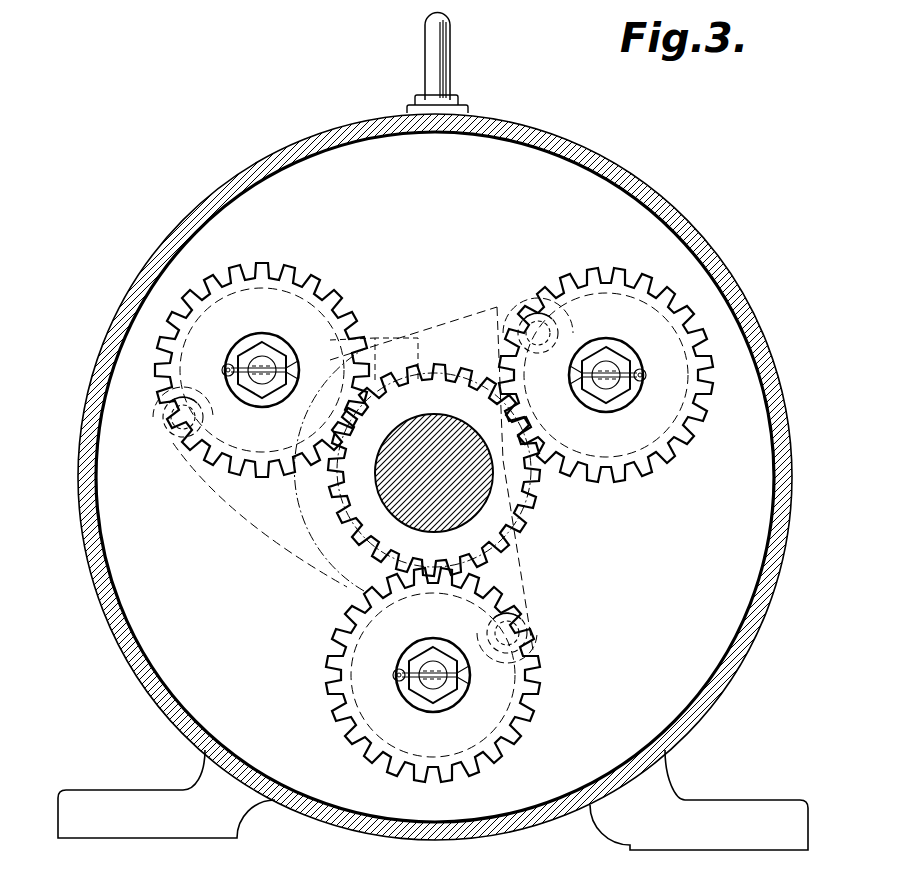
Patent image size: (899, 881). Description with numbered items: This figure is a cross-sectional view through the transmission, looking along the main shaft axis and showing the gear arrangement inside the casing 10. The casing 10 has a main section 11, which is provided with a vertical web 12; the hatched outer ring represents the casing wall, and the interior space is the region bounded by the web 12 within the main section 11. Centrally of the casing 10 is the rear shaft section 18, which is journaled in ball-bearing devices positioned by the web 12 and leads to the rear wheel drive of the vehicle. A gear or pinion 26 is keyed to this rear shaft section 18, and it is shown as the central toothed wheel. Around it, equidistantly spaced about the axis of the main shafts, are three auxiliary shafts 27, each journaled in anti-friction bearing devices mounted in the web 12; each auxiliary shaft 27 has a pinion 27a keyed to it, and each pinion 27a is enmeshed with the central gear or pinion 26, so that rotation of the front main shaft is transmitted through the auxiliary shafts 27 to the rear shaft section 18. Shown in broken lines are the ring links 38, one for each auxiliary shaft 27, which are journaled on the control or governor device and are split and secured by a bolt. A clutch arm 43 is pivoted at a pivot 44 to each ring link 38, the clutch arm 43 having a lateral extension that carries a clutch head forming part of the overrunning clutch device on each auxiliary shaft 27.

The casing 10 is at (513, 112).
The main section 11 is at (598, 153).
The vertical web 12 is at (747, 412).
The rear shaft section 18 is at (397, 510).
The gear or pinion 26 is at (546, 528).
The auxiliary shaft 27 is at (272, 362).
The pinion 27a is at (293, 273).
The ring link 38 is at (496, 303).
The clutch arm 43 is at (170, 443).
The pivot 44 is at (195, 445).